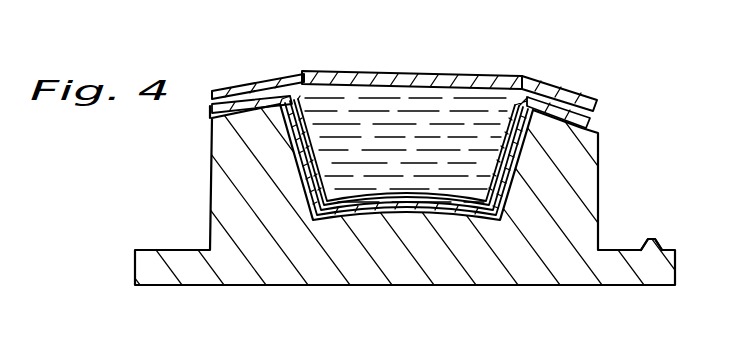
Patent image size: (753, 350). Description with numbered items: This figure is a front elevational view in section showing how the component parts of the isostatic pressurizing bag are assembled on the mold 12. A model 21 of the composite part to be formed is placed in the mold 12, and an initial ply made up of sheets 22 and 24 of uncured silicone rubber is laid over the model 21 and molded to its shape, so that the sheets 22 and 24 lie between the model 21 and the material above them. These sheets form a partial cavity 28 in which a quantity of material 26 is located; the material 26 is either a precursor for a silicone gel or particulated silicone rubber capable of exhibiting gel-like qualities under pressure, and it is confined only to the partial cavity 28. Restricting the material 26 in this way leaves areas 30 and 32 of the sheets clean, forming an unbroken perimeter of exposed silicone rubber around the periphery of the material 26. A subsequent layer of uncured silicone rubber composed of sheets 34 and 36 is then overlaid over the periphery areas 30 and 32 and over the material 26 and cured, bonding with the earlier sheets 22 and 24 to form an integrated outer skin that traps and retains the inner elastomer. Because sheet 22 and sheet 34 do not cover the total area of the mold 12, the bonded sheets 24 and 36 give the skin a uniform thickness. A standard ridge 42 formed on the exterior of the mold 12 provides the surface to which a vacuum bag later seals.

The mold 12 is at (583, 198).
The model 21 is at (376, 206).
The sheet 22 is at (473, 212).
The sheet 24 is at (430, 203).
The material 26 is at (378, 130).
The partial cavity 28 is at (340, 168).
The area 30 is at (211, 106).
The area 32 is at (578, 113).
The sheet 34 is at (437, 72).
The sheet 36 is at (540, 90).
The standard ridge 42 is at (650, 240).